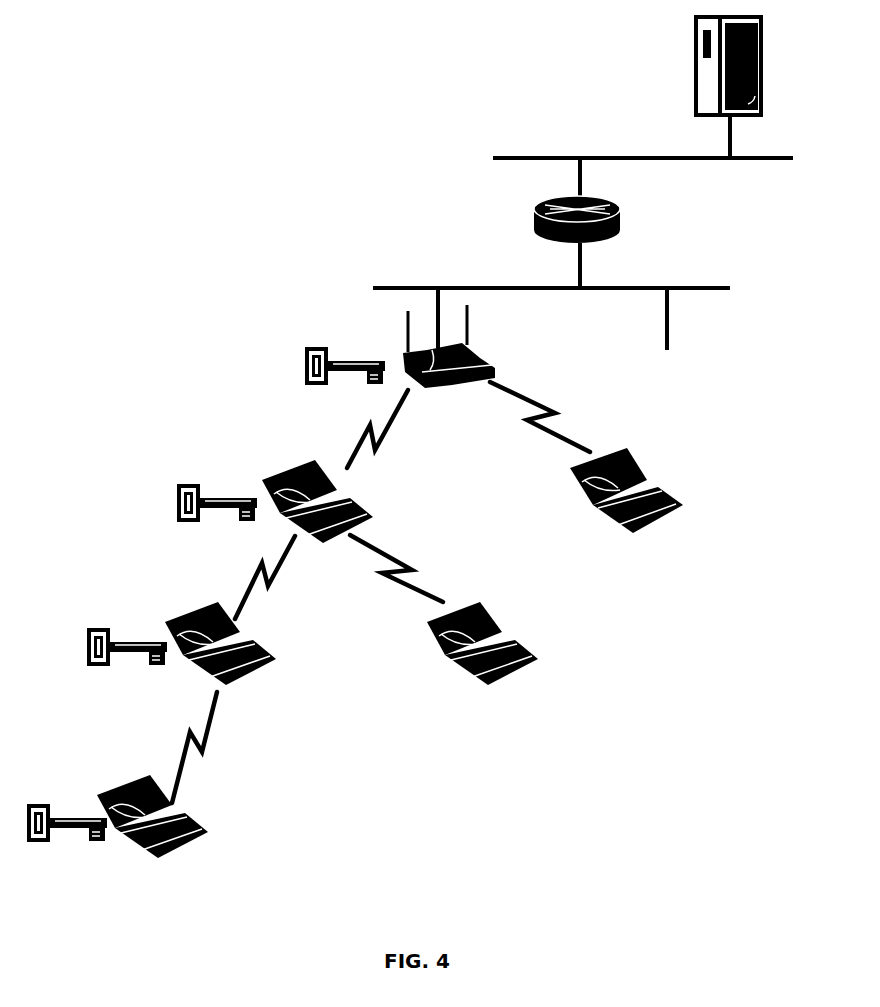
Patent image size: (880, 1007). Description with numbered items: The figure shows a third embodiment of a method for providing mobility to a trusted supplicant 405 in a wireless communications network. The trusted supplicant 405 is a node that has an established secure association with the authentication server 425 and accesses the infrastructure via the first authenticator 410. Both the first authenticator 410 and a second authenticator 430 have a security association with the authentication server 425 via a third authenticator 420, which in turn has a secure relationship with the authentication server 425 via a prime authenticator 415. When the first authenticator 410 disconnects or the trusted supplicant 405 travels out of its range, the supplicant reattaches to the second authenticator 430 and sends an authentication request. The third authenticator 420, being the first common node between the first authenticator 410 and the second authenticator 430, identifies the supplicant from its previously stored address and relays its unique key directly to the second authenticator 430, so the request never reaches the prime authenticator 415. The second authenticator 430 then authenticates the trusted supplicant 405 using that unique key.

The trusted supplicant 405 is at (120, 785).
The first authenticator 410 is at (195, 608).
The prime authenticator 415 is at (455, 388).
The third authenticator 420 is at (283, 470).
The authentication server 425 is at (765, 70).
The second authenticator 430 is at (497, 627).